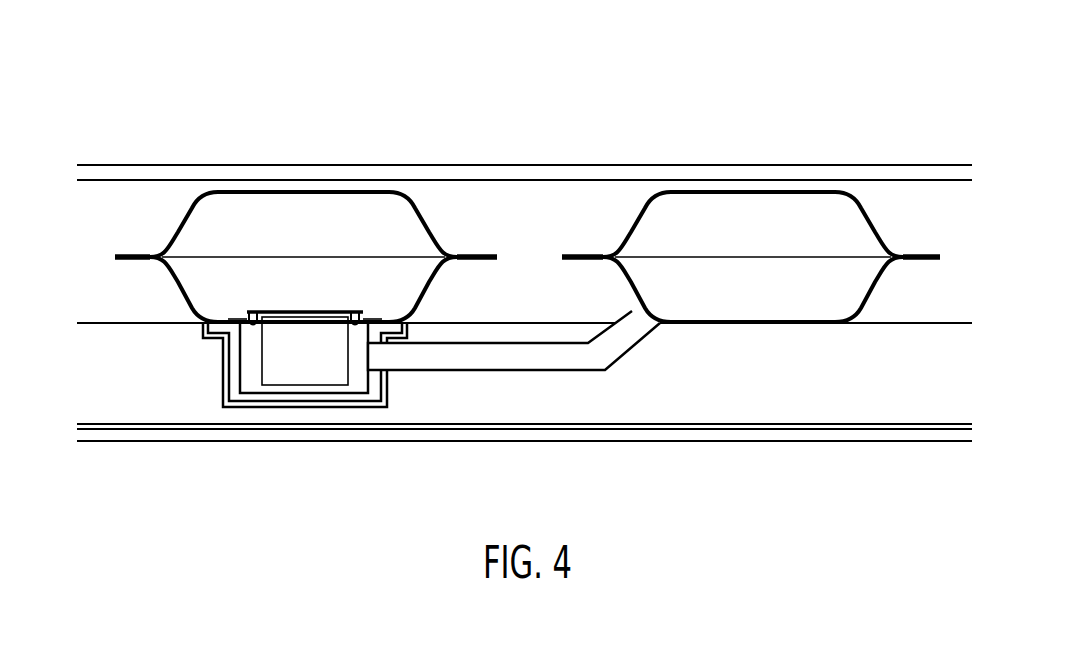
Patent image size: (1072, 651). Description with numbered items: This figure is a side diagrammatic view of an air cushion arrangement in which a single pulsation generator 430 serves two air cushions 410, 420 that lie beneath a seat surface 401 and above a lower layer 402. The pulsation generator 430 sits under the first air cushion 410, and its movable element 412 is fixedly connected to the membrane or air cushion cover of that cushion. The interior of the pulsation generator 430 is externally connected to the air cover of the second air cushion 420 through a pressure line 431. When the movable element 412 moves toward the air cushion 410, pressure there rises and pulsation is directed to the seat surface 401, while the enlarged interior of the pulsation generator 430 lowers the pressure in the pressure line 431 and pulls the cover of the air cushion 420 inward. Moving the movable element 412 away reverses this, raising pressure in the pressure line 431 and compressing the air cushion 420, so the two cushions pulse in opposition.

The seat surface 401 is at (734, 108).
The base layer / sheet 402 is at (712, 450).
The air cushion 410 is at (144, 285).
The movable element 412 is at (320, 387).
The air cushion 420 is at (909, 291).
The pulsation generator 430 is at (223, 398).
The pressure line 431 is at (566, 384).